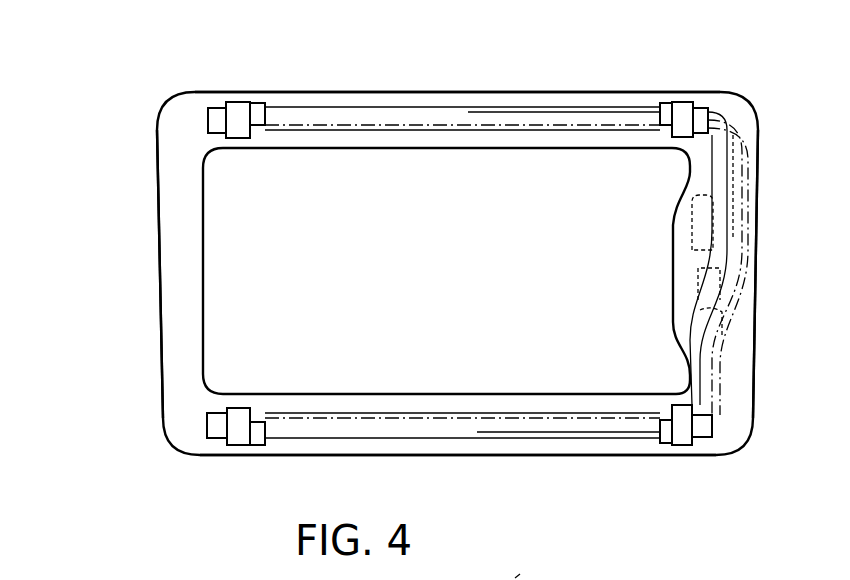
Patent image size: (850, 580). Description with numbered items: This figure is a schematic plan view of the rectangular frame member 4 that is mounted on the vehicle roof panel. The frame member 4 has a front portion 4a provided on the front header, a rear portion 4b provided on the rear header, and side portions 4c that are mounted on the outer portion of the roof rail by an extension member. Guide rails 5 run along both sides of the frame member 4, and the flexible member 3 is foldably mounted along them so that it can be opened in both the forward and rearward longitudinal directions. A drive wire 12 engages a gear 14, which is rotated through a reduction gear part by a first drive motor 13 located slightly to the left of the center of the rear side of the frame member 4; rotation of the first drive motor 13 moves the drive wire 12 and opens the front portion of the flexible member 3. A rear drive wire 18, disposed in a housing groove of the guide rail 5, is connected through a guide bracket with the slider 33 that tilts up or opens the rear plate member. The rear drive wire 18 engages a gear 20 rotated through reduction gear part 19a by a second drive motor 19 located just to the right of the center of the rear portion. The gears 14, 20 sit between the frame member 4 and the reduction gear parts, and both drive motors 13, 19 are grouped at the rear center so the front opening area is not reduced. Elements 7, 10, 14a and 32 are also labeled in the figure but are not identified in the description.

The flexible member 3 is at (529, 567).
The frame member 4 is at (160, 392).
The front portion of the frame member 4a is at (157, 258).
The rear portion of the frame member 4b is at (756, 340).
The side portion of the frame member 4c is at (507, 93).
The guide rail 5 is at (437, 105).
The bearing bracket 7 is at (240, 104).
The retaining clip 10 is at (257, 105).
The drive wire 12 is at (342, 130).
The first drive motor 13 is at (728, 345).
The gear 14 is at (733, 292).
The conductor portion 14a is at (697, 293).
The rear drive wire 18 is at (760, 123).
The second drive motor 19 is at (693, 213).
The reduction gear part 19a is at (762, 240).
The gear 20 is at (710, 270).
The mounting bracket 32 is at (690, 104).
The slider 33 is at (667, 105).